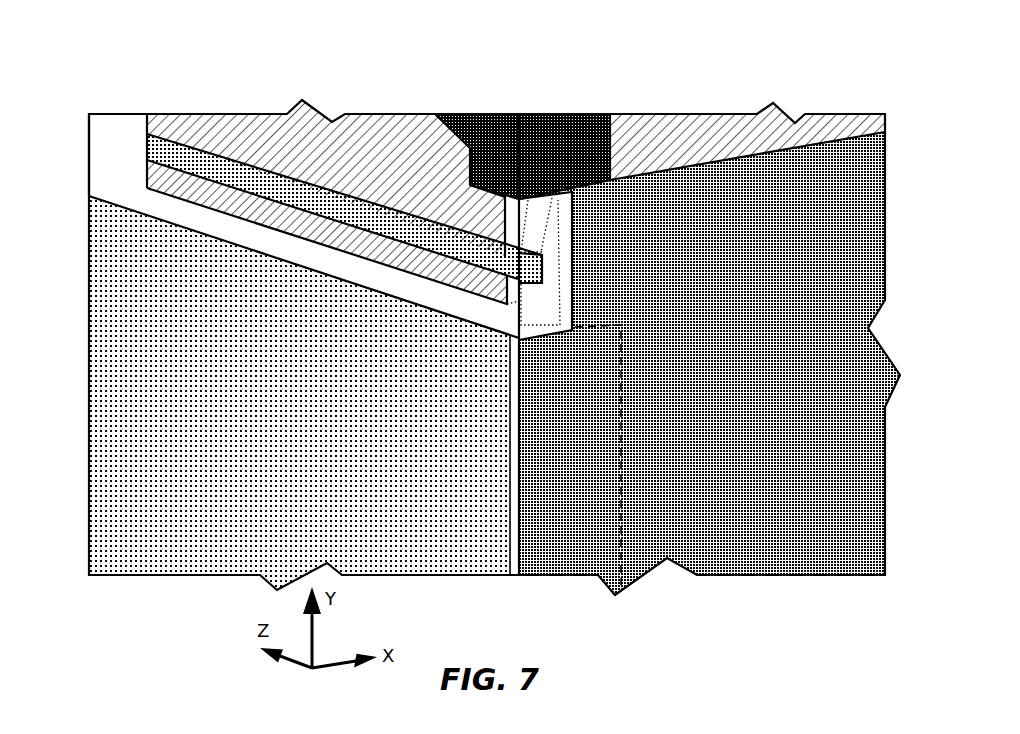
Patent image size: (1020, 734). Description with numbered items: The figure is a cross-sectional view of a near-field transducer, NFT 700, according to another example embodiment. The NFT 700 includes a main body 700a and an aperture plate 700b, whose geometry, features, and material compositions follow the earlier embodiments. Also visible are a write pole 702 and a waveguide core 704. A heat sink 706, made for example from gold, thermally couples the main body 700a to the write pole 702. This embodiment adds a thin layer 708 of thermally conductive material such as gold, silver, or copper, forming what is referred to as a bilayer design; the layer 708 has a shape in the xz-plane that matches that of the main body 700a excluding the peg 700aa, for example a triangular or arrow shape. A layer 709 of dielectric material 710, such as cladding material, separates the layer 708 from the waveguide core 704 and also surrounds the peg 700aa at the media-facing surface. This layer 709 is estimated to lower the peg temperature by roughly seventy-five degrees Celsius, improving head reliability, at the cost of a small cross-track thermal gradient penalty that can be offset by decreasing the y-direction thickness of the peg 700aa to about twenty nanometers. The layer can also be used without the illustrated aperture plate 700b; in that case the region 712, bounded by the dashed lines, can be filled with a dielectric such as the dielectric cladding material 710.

The near-field transducer 700 is at (209, 82).
The main body 700a is at (146, 148).
The peg 700aa is at (544, 271).
The aperture plate 700b is at (748, 548).
The write pole 702 is at (541, 113).
The waveguide core 704 is at (187, 550).
The heat sink 706 is at (363, 137).
The thin layer of thermally conductive material 708 is at (147, 178).
The layer of dielectric material 709 is at (290, 247).
The dielectric material 710 is at (107, 132).
The region 712 is at (578, 557).